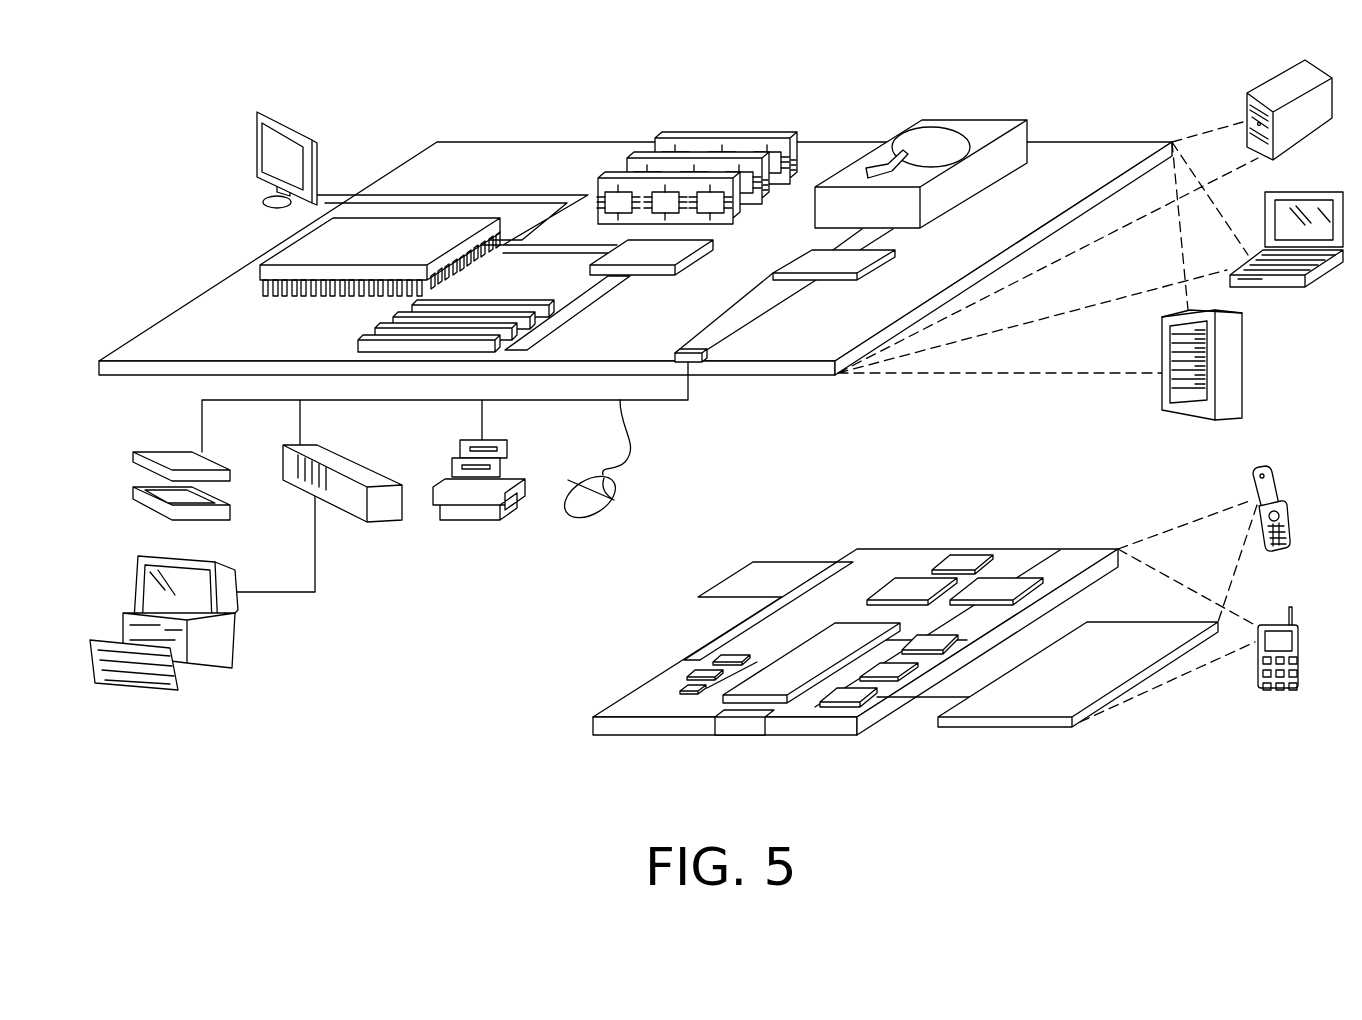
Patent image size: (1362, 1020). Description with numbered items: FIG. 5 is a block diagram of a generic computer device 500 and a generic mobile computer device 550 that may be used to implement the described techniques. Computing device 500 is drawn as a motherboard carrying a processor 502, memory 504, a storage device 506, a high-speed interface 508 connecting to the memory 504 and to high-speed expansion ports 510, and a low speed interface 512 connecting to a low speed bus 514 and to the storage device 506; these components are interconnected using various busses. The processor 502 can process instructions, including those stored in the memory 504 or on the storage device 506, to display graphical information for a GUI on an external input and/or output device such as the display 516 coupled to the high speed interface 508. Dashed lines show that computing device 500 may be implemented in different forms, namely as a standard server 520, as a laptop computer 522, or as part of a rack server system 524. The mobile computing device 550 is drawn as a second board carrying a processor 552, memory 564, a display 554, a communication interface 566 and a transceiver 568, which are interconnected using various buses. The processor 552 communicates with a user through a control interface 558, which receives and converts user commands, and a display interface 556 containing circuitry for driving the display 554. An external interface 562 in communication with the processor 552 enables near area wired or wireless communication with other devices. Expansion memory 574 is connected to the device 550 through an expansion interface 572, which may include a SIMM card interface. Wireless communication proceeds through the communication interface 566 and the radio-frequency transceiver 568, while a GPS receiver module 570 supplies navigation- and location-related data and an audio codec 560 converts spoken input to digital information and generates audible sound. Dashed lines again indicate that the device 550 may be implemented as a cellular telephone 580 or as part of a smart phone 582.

The computing device 500 is at (392, 93).
The processor 502 is at (284, 246).
The memory 504 is at (733, 136).
The storage device 506 is at (962, 119).
The high-speed interface 508 is at (665, 252).
The high-speed expansion ports 510 is at (383, 323).
The low speed interface 512 is at (809, 256).
The low speed bus 514 is at (697, 348).
The display 516 is at (262, 112).
The standard server 520 is at (1269, 90).
The laptop computer 522 is at (1322, 192).
The rack server system 524 is at (1244, 365).
The mobile computer device 550 is at (550, 739).
The processor 552 is at (779, 667).
The display 554 is at (1117, 637).
The display interface 556 is at (857, 692).
The control interface 558 is at (893, 667).
The audio codec 560 is at (934, 637).
The external interface 562 is at (741, 720).
The memory 564 is at (697, 672).
The communication interface 566 is at (912, 582).
The transceiver 568 is at (1002, 582).
The GPS receiver module 570 is at (963, 557).
The expansion interface 572 is at (839, 560).
The expansion memory 574 is at (753, 560).
The cellular telephone 580 is at (1263, 473).
The smart phone 582 is at (1277, 621).